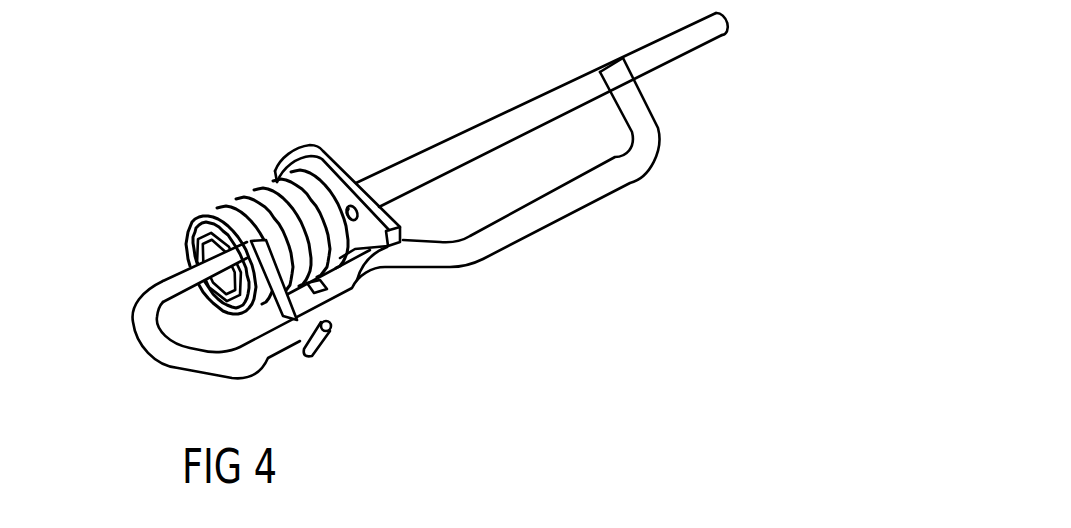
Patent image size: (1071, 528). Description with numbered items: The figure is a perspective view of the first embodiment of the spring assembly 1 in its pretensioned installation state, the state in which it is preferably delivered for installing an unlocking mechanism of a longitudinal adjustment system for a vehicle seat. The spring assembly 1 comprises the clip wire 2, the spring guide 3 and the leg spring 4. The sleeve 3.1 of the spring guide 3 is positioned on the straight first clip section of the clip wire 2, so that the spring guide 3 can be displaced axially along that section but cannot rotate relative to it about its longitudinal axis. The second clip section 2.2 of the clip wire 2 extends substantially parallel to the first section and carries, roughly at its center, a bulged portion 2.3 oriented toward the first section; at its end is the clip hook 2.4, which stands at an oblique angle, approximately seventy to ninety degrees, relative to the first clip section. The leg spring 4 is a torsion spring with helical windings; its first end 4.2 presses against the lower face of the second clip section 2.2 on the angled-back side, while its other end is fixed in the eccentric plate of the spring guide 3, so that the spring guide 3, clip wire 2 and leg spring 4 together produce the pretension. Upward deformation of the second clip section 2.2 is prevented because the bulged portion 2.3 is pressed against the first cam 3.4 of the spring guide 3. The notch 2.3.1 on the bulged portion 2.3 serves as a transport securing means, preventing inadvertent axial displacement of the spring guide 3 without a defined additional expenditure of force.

The spring assembly 1 is at (196, 79).
The clip wire 2 is at (610, 182).
The second clip section 2.2 is at (553, 212).
The bulged portion 2.3 is at (367, 277).
The notch 2.3.1 is at (375, 258).
The clip hook 2.4 is at (690, 40).
The spring guide 3 is at (325, 147).
The sleeve 3.1 is at (183, 241).
The first cam 3.4 is at (392, 223).
The leg spring 4 is at (227, 200).
The first end 4.2 is at (278, 312).